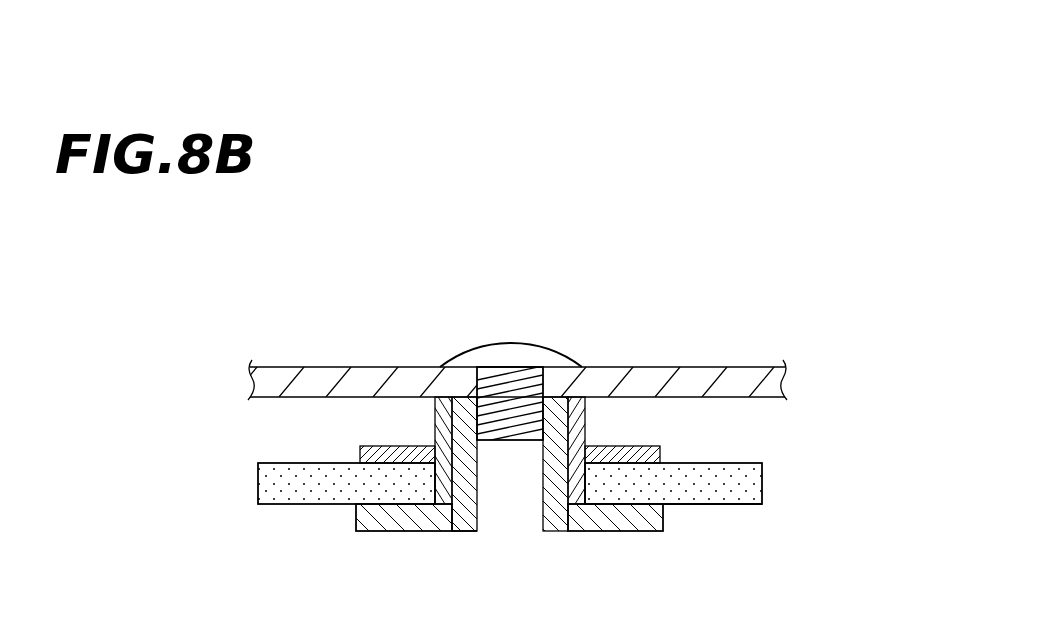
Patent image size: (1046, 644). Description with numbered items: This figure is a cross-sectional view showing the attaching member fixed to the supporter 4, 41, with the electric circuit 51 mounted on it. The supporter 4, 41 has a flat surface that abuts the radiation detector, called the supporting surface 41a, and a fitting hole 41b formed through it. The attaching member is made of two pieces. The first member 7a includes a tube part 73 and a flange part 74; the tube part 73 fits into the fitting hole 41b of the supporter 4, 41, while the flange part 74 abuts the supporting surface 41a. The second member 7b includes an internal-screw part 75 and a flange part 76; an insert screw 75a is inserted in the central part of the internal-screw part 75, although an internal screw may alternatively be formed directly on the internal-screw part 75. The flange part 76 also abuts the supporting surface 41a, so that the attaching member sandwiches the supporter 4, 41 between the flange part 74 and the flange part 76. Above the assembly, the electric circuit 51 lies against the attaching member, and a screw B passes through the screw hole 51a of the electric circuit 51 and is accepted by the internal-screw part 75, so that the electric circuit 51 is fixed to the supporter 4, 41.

The screw B is at (505, 343).
The electric circuit 51 is at (708, 362).
The screw hole 51a is at (543, 390).
The tube part 73 is at (443, 427).
The flange part 74 is at (358, 453).
The internal-screw part 75 is at (462, 537).
The insert screw 75a is at (477, 493).
The flange part 76 is at (393, 530).
The first member 7a is at (590, 437).
The second member 7b is at (607, 537).
The substrate 4, 41 is at (767, 483).
The supporting surface 41a is at (707, 503).
The fitting hole 41b is at (430, 483).